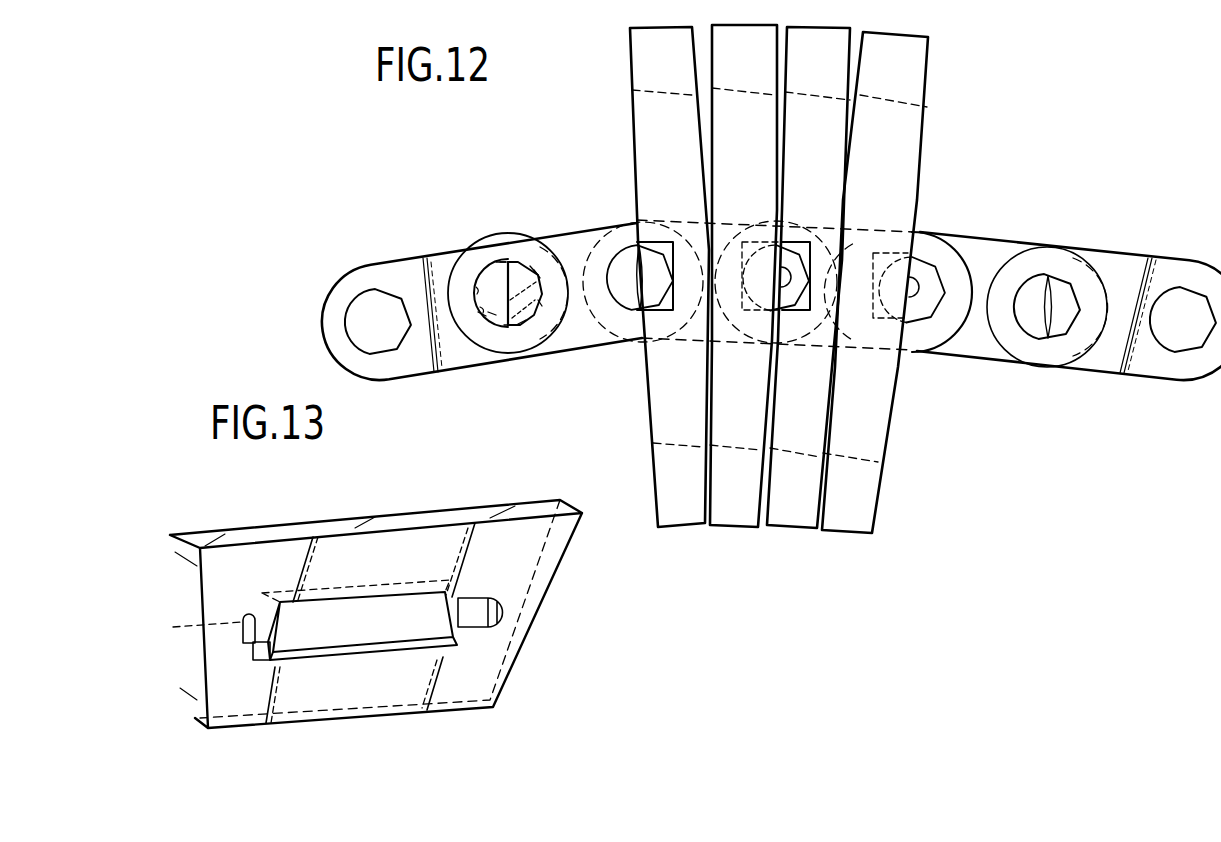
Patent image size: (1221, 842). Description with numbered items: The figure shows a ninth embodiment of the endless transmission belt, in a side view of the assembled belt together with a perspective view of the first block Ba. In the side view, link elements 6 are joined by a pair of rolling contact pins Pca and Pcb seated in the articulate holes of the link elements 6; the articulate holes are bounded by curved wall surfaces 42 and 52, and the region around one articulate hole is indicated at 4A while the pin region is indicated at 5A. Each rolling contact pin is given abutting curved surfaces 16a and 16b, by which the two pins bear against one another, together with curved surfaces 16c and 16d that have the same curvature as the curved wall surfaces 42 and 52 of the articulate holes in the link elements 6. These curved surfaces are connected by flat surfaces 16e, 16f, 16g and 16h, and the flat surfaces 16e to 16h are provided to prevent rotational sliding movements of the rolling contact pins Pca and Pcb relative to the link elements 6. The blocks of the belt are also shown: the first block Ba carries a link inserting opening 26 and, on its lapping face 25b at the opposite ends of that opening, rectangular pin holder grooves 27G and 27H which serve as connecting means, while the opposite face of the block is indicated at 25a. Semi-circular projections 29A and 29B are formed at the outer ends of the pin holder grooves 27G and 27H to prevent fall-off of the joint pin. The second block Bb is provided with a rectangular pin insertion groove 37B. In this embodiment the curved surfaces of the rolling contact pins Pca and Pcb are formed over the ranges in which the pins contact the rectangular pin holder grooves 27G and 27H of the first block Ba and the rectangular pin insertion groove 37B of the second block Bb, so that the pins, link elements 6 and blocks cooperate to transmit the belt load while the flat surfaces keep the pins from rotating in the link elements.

In FIG. 12, the link plate 4A is at (473, 280).
In FIG. 12, the curved wall surface 52 is at (478, 268).
In FIG. 12, the curved wall surface 42 is at (483, 300).
In FIG. 12, the pin 5A is at (513, 318).
In FIG. 12, the link element 6 is at (588, 238).
In FIG. 12, the curved surface 16a is at (508, 263).
In FIG. 12, the curved surface 16b is at (500, 273).
In FIG. 12, the curved surface 16c is at (480, 312).
In FIG. 12, the curved surface 16d is at (535, 268).
In FIG. 12, the flat surface 16e is at (503, 262).
In FIG. 12, the flat surface 16f is at (508, 324).
In FIG. 12, the flat surface 16g is at (537, 272).
In FIG. 12, the flat surface 16h is at (522, 324).
In FIG. 12, the rolling contact pin Pca is at (492, 313).
In FIG. 12, the rolling contact pin Pcb is at (540, 304).
In FIG. 12, the first block Ba is at (722, 32).
In FIG. 13, the first block Ba is at (485, 533).
In FIG. 12, the second block Bb is at (840, 37).
In FIG. 13, the block surface 25a is at (267, 560).
In FIG. 12, the lapping face 25b is at (778, 86).
In FIG. 13, the lapping face 25b is at (387, 687).
In FIG. 12, the rectangular pin insertion groove 37B is at (800, 247).
In FIG. 12, the rectangular pin holder groove 27G is at (750, 315).
In FIG. 13, the rectangular pin holder groove 27G is at (260, 655).
In FIG. 13, the rectangular pin holder groove 27H is at (472, 615).
In FIG. 12, the semi-circular projection 29A is at (779, 302).
In FIG. 13, the semi-circular projection 29A is at (243, 633).
In FIG. 13, the semi-circular projection 29B is at (505, 610).
In FIG. 13, the link inserting opening 26 is at (327, 638).